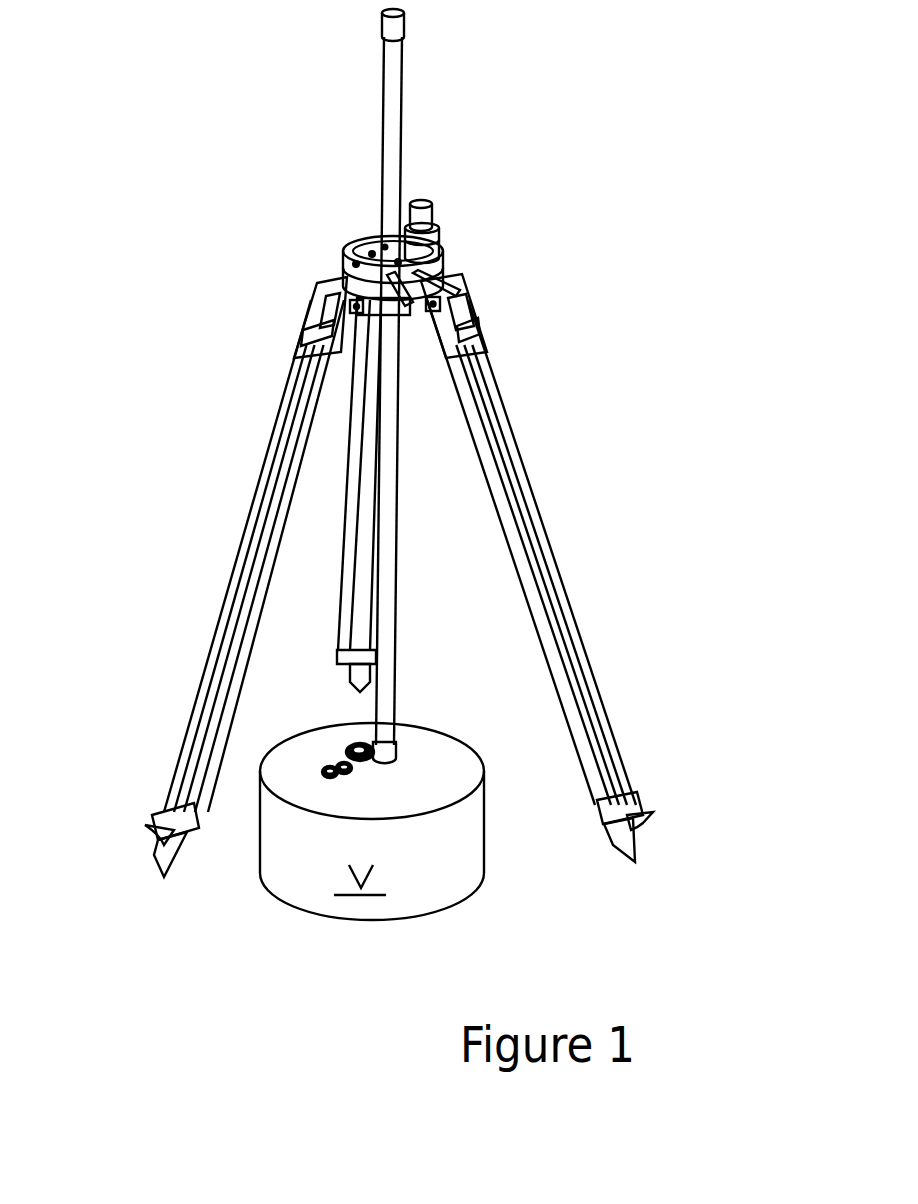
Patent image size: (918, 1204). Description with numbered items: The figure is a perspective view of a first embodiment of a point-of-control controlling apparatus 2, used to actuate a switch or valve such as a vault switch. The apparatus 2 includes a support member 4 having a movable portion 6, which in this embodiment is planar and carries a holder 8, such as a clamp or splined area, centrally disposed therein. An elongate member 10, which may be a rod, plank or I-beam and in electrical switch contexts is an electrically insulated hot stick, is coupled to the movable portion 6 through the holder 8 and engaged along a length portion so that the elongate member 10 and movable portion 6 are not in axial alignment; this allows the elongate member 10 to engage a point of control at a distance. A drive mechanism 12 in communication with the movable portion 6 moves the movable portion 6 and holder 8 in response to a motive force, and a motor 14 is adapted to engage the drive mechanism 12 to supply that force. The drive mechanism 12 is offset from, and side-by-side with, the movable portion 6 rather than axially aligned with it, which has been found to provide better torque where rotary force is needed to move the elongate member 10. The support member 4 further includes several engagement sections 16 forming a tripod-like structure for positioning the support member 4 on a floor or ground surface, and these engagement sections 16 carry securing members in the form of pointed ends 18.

The controlling apparatus 2 is at (278, 492).
The support member 4 is at (343, 256).
The movable portion 6 is at (442, 263).
The holder 8 is at (372, 246).
The elongate member 10 is at (382, 118).
The drive mechanism 12 is at (453, 275).
The motor 14 is at (442, 211).
The engagement section 16 is at (558, 570).
The pointed end 18 is at (641, 815).